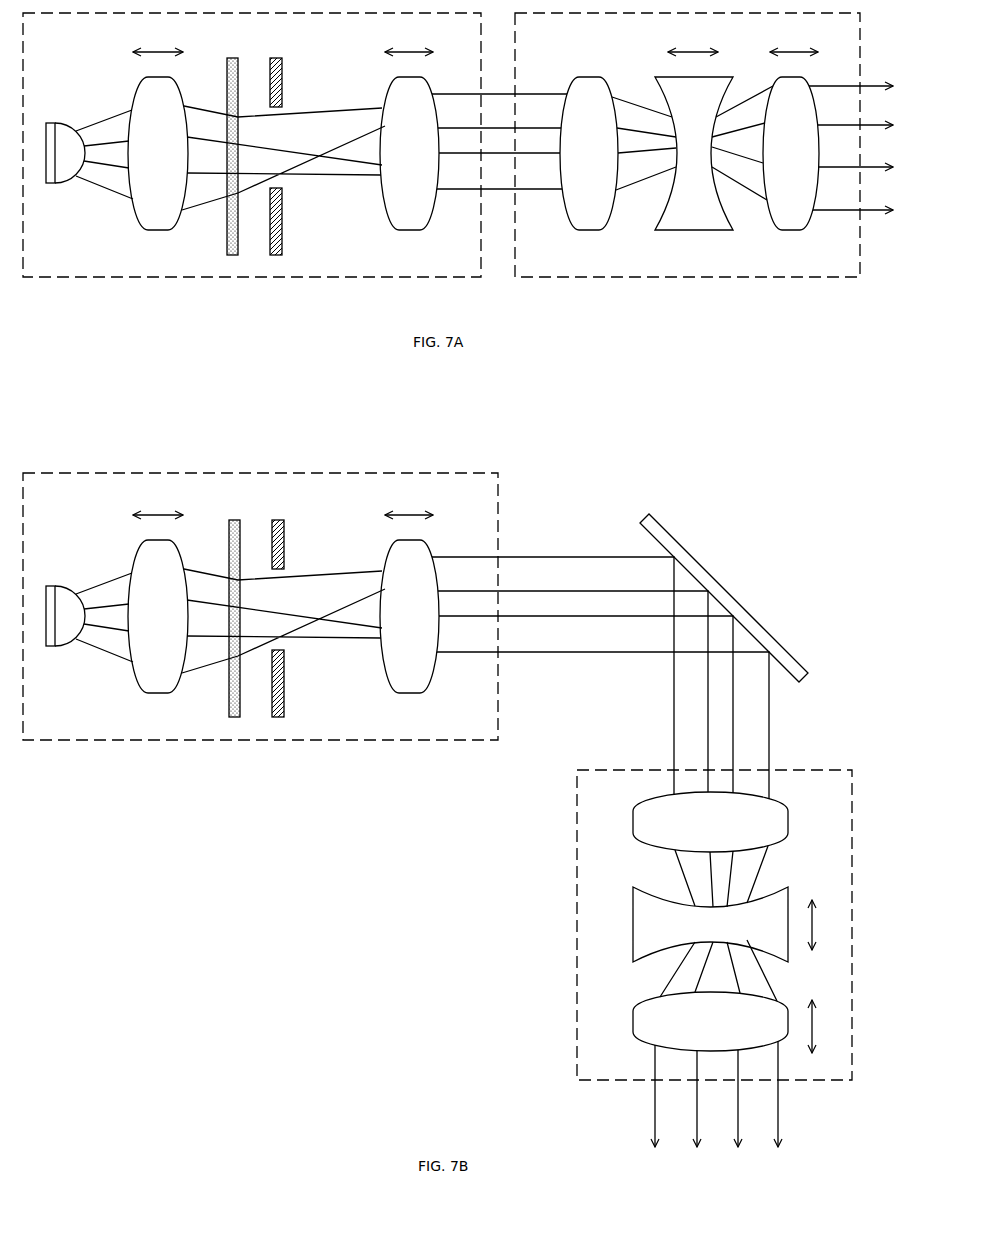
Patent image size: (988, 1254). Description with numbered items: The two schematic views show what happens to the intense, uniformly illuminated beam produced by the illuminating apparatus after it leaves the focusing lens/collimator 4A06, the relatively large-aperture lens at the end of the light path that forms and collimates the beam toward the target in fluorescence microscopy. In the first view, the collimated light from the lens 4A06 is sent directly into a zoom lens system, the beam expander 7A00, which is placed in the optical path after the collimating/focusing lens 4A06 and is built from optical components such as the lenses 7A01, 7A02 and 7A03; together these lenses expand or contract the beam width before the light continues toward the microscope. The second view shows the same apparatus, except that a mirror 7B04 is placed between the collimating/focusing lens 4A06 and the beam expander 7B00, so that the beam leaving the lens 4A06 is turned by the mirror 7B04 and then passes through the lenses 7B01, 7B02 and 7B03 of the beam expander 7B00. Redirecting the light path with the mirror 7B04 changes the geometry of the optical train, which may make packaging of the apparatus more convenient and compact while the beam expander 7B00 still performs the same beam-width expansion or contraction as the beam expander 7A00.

In FIG. 7A, the focusing lens/collimator 4A06 is at (410, 233).
In FIG. 7B, the focusing lens/collimator 4A06 is at (410, 696).
In FIG. 7A, the beam expander 7A00 is at (618, 280).
In FIG. 7A, the lens 7A01 is at (589, 166).
In FIG. 7A, the lens 7A02 is at (694, 154).
In FIG. 7A, the lens 7A03 is at (791, 154).
In FIG. 7B, the beam expander 7B00 is at (575, 963).
In FIG. 7B, the lens 7B01 is at (689, 822).
In FIG. 7B, the lens 7B02 is at (701, 924).
In FIG. 7B, the lens 7B03 is at (701, 1022).
In FIG. 7B, the mirror 7B04 is at (724, 598).